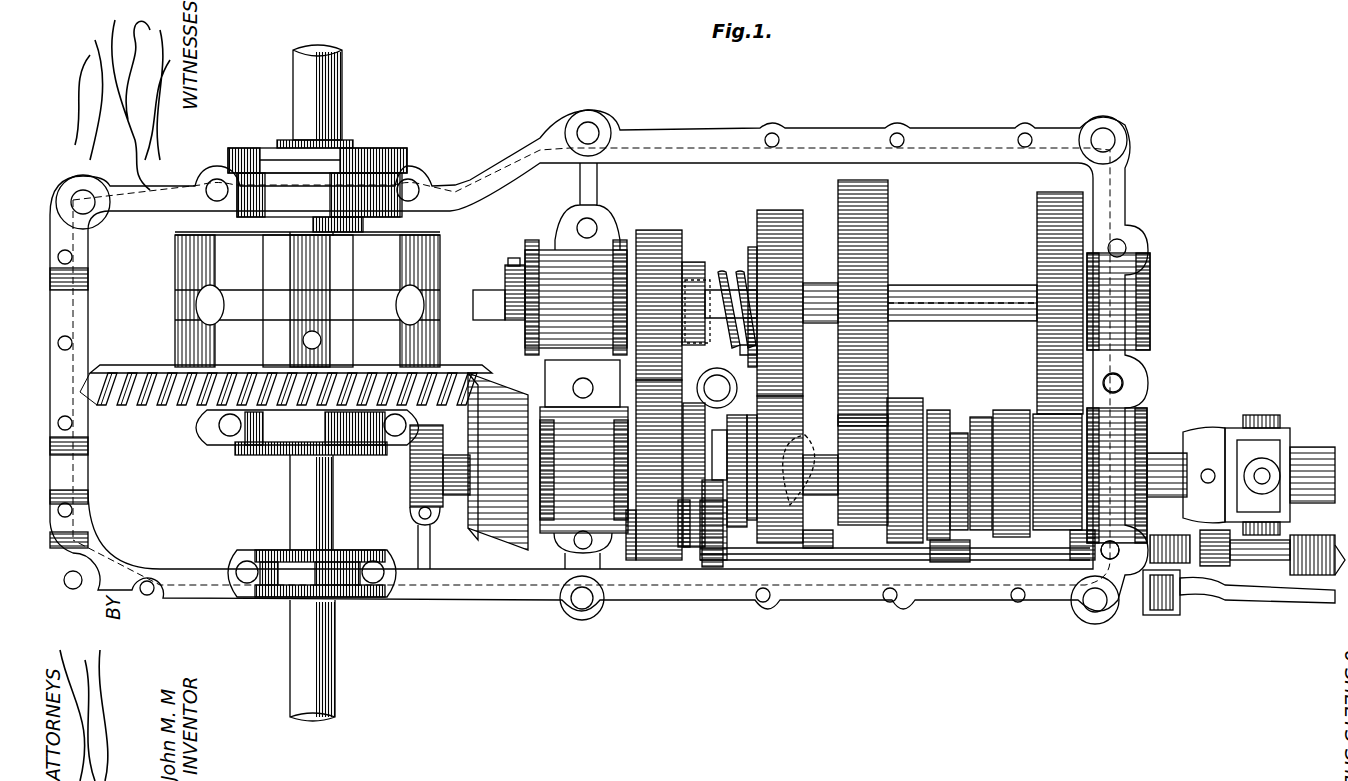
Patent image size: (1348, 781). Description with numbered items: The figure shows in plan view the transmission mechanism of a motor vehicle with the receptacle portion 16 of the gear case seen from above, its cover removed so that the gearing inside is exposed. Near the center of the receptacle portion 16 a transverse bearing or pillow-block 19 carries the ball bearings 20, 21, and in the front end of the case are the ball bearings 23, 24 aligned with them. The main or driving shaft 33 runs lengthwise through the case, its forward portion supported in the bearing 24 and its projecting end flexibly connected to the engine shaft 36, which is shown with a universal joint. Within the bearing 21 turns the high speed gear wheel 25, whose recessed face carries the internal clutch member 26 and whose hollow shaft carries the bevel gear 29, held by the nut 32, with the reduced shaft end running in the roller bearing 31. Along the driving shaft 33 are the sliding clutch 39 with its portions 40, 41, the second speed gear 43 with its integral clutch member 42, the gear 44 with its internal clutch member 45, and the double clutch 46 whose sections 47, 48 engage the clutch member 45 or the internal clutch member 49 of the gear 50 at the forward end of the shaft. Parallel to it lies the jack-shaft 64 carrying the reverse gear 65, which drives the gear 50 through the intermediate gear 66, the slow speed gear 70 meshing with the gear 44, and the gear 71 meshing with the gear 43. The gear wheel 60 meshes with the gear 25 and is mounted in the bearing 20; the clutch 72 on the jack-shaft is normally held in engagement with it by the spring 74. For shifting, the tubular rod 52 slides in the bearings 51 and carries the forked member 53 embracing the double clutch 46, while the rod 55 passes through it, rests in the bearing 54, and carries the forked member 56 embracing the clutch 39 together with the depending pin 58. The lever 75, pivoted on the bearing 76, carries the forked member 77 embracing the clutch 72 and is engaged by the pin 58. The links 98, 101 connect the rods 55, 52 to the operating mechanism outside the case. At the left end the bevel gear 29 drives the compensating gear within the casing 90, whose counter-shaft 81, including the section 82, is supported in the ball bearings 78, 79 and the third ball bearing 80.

The receptacle portion 16 is at (599, 367).
The bearing or pillow-block 19 is at (582, 383).
The ball bearing 20 is at (540, 262).
The ball bearing 21 is at (540, 547).
The ball bearing 23 is at (1150, 262).
The ball bearing 24 is at (1147, 420).
The gear wheel 25 is at (643, 558).
The internal clutch member 26 is at (684, 548).
The bevel gear 29 is at (485, 545).
The roller bearing 31 is at (410, 488).
The nut 32 is at (460, 495).
The main or driving shaft 33 is at (1165, 453).
The engine shaft 36 is at (1300, 440).
The clutch 39 is at (725, 471).
The clutch portion 40 is at (692, 398).
The clutch portion 41 is at (750, 415).
The integral clutch member 42 is at (740, 520).
The second speed gear 43 is at (785, 543).
The gear 44 is at (845, 470).
The internal clutch member 45 is at (925, 405).
The double clutch 46 is at (958, 433).
The clutch section 47 is at (940, 410).
The clutch section 48 is at (980, 417).
The internal clutch member 49 is at (1012, 410).
The gear 50 is at (1060, 530).
The bearing 51 is at (1080, 540).
The tubular rod 52 is at (1000, 560).
The forked member 53 is at (955, 562).
The bearing 54 is at (628, 555).
The rod 55 is at (820, 548).
The forked member 56 is at (712, 567).
The depending pin 58 is at (800, 420).
The gear wheel 60 is at (659, 292).
The jack-shaft 64 is at (947, 293).
The reverse gear 65 is at (1037, 222).
The intermediate gear 66 is at (1085, 395).
The slow speed gear 70 is at (895, 212).
The gear 71 is at (780, 290).
The clutch 72 is at (722, 270).
The spring 74 is at (740, 270).
The lever 75 is at (740, 358).
The bearing 76 is at (717, 388).
The forked member 77 is at (692, 270).
The ball bearing 78 is at (372, 142).
The ball bearing 79 is at (270, 597).
The third ball bearing 80 is at (270, 455).
The counter-shaft 81 is at (328, 383).
The counter-shaft section 82 is at (286, 393).
The casing 90 is at (175, 297).
The link 98 is at (1335, 540).
The link 101 is at (1300, 618).